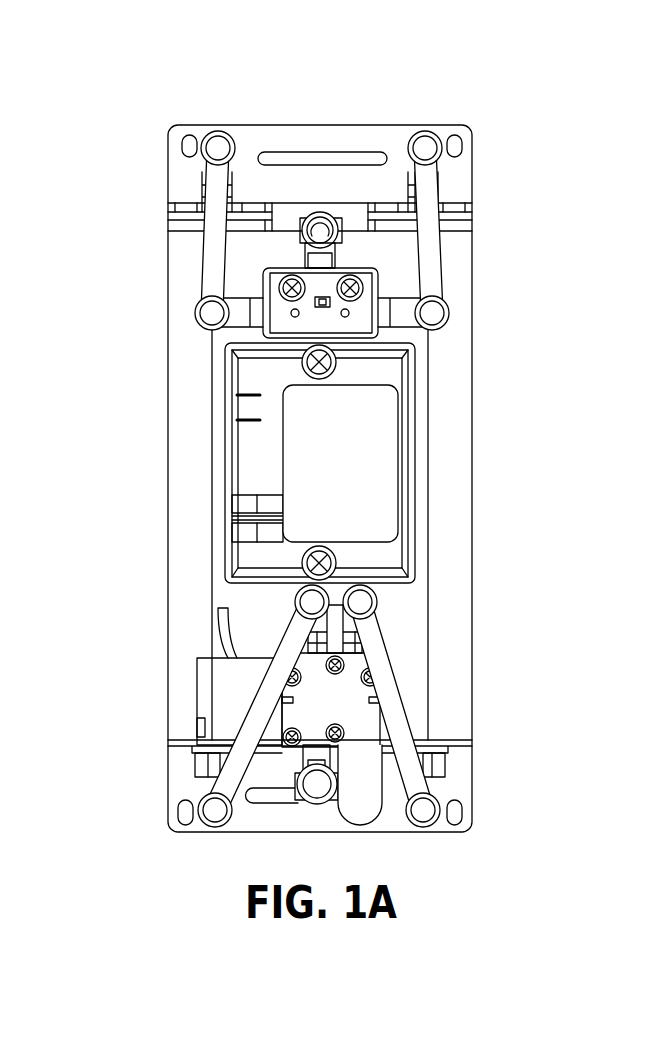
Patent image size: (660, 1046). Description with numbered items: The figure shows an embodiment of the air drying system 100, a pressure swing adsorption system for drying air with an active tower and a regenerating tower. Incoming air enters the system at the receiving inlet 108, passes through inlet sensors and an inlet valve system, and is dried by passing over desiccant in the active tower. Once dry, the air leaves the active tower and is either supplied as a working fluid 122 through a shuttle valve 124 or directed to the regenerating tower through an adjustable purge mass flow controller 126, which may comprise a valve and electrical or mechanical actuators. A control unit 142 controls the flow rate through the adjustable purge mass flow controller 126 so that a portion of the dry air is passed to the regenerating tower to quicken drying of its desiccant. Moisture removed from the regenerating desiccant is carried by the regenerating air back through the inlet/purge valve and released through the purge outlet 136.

The air drying system 100 is at (126, 108).
The receiving inlet 108 is at (317, 786).
The working fluid 122 is at (321, 231).
The shuttle valve 124 is at (372, 292).
The adjustable purge mass flow controller 126 is at (368, 323).
The purge outlet 136 is at (360, 810).
The control unit 142 is at (388, 502).